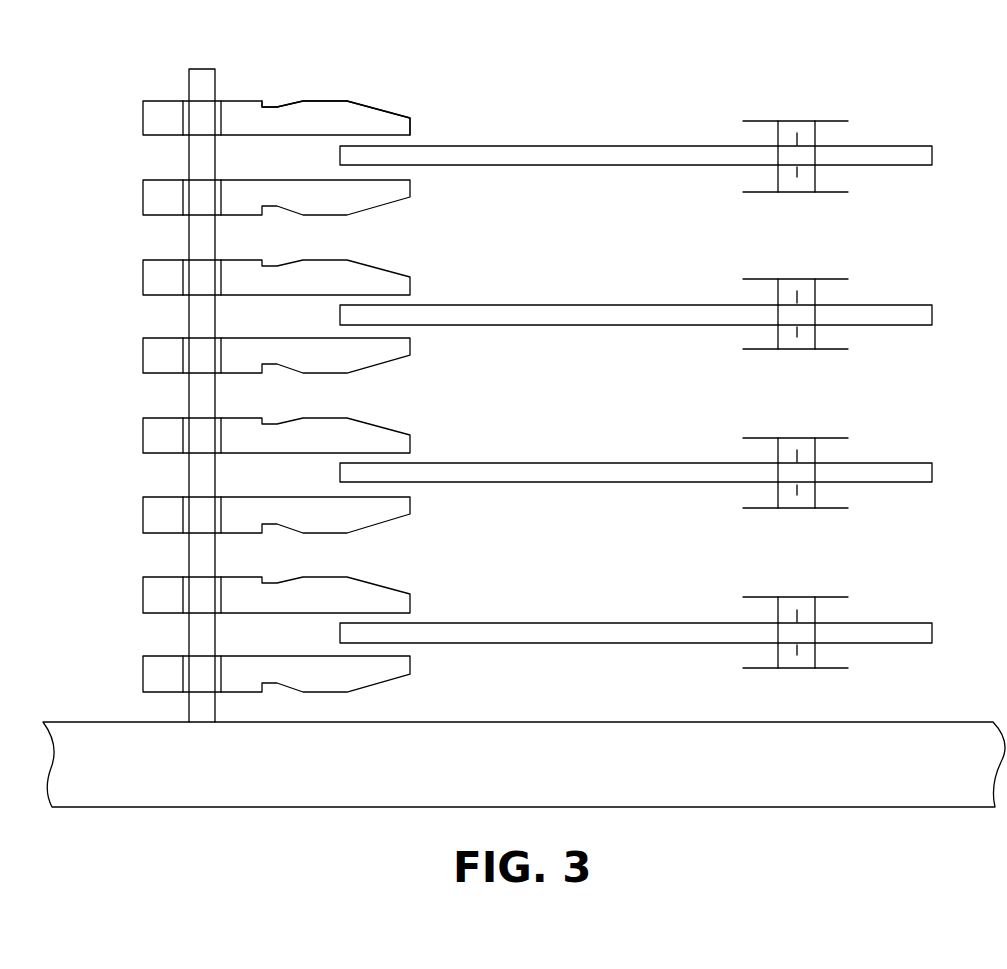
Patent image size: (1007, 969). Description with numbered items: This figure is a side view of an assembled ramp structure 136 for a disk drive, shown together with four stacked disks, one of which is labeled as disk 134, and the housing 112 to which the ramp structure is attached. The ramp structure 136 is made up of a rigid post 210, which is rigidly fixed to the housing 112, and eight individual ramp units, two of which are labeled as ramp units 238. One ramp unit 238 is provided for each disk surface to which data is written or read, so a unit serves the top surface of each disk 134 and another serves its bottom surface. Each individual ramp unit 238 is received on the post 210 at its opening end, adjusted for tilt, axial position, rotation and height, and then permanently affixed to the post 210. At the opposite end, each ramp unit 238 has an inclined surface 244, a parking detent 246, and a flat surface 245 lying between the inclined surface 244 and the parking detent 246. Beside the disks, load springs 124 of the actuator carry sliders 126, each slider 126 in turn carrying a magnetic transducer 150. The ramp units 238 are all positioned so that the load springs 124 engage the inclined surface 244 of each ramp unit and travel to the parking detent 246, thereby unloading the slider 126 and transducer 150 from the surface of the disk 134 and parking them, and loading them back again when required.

The housing 112 is at (914, 720).
The ramp structure 136 is at (204, 76).
The post 210 is at (197, 393).
The individual ramp unit 238 is at (143, 115).
The parking detent 246 is at (279, 106).
The flat surface 245 is at (326, 100).
The inclined surface 244 is at (378, 109).
The disk 134 is at (933, 153).
The load spring 124 is at (770, 121).
The slider 126 is at (815, 138).
The transducer 150 is at (803, 170).